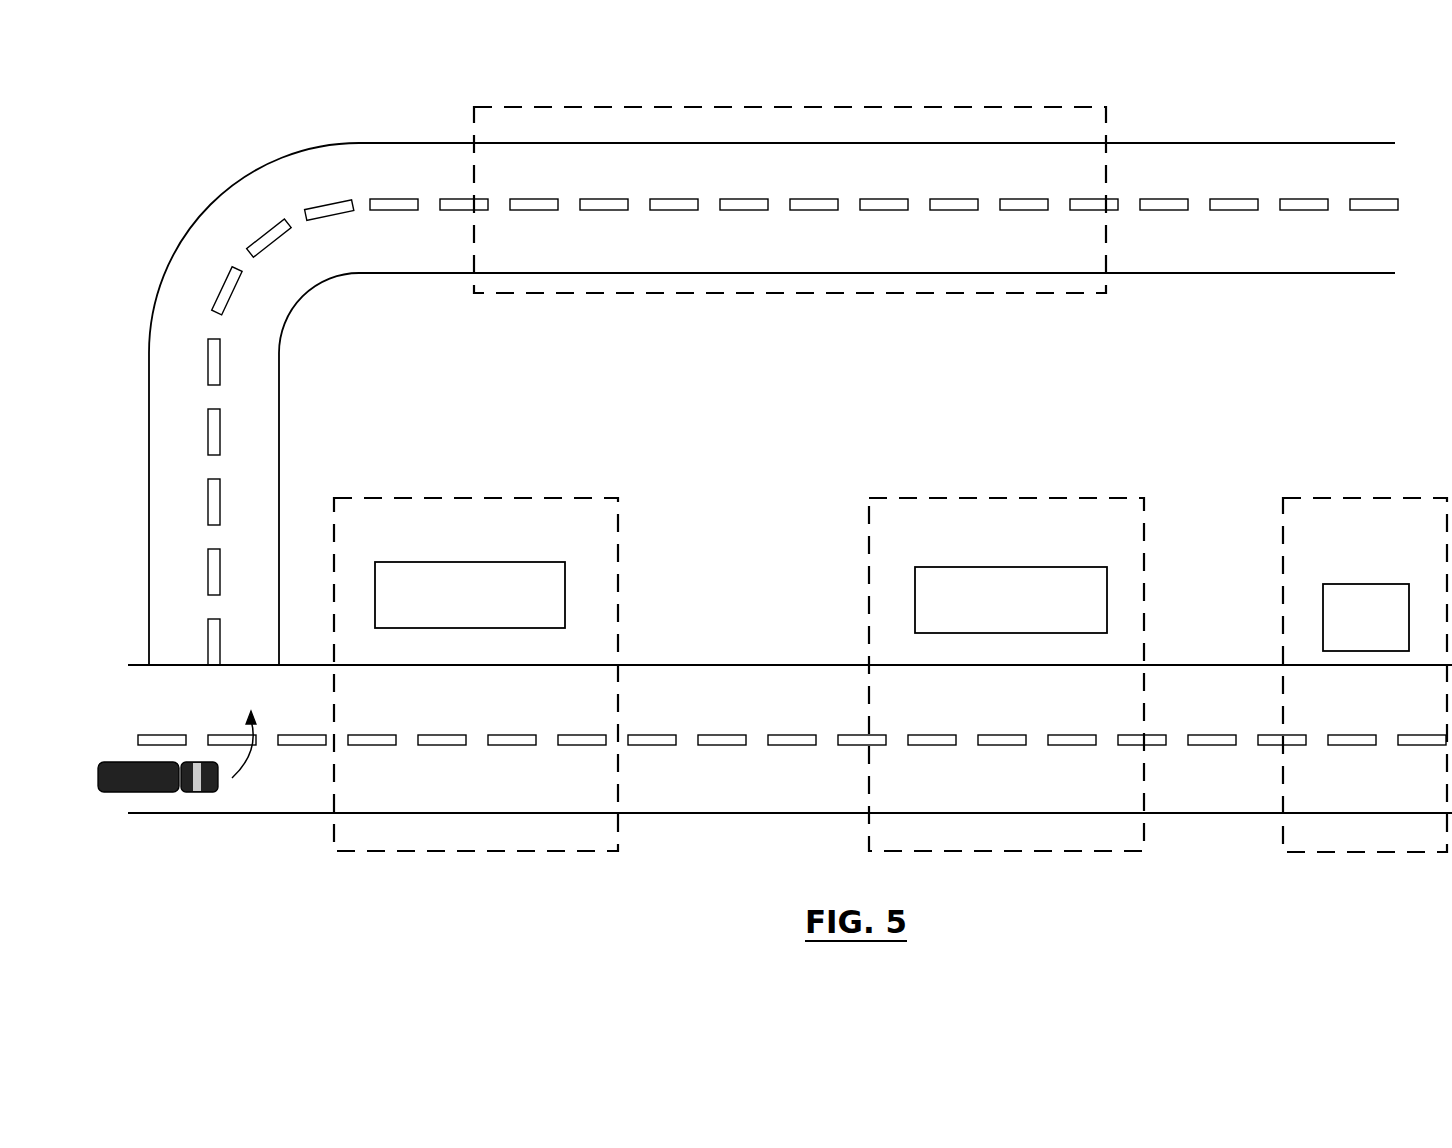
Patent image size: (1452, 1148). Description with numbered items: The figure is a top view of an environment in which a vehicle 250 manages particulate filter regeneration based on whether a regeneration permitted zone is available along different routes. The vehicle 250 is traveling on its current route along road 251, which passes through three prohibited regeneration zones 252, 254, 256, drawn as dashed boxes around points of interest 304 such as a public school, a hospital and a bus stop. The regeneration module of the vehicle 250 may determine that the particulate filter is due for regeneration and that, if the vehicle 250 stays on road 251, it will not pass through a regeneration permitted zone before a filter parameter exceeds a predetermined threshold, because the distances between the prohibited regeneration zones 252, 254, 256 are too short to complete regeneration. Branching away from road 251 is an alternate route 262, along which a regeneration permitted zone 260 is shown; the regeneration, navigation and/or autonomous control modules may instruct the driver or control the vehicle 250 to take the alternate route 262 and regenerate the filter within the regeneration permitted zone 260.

The vehicle 250 is at (158, 793).
The road 251 is at (762, 663).
The prohibited regeneration zone 252 is at (417, 495).
The prohibited regeneration zone 254 is at (888, 495).
The prohibited regeneration zone 256 is at (1298, 495).
The regeneration permitted zone 260 is at (518, 105).
The alternate route 262 is at (410, 140).
The point of interest 304 is at (550, 628).